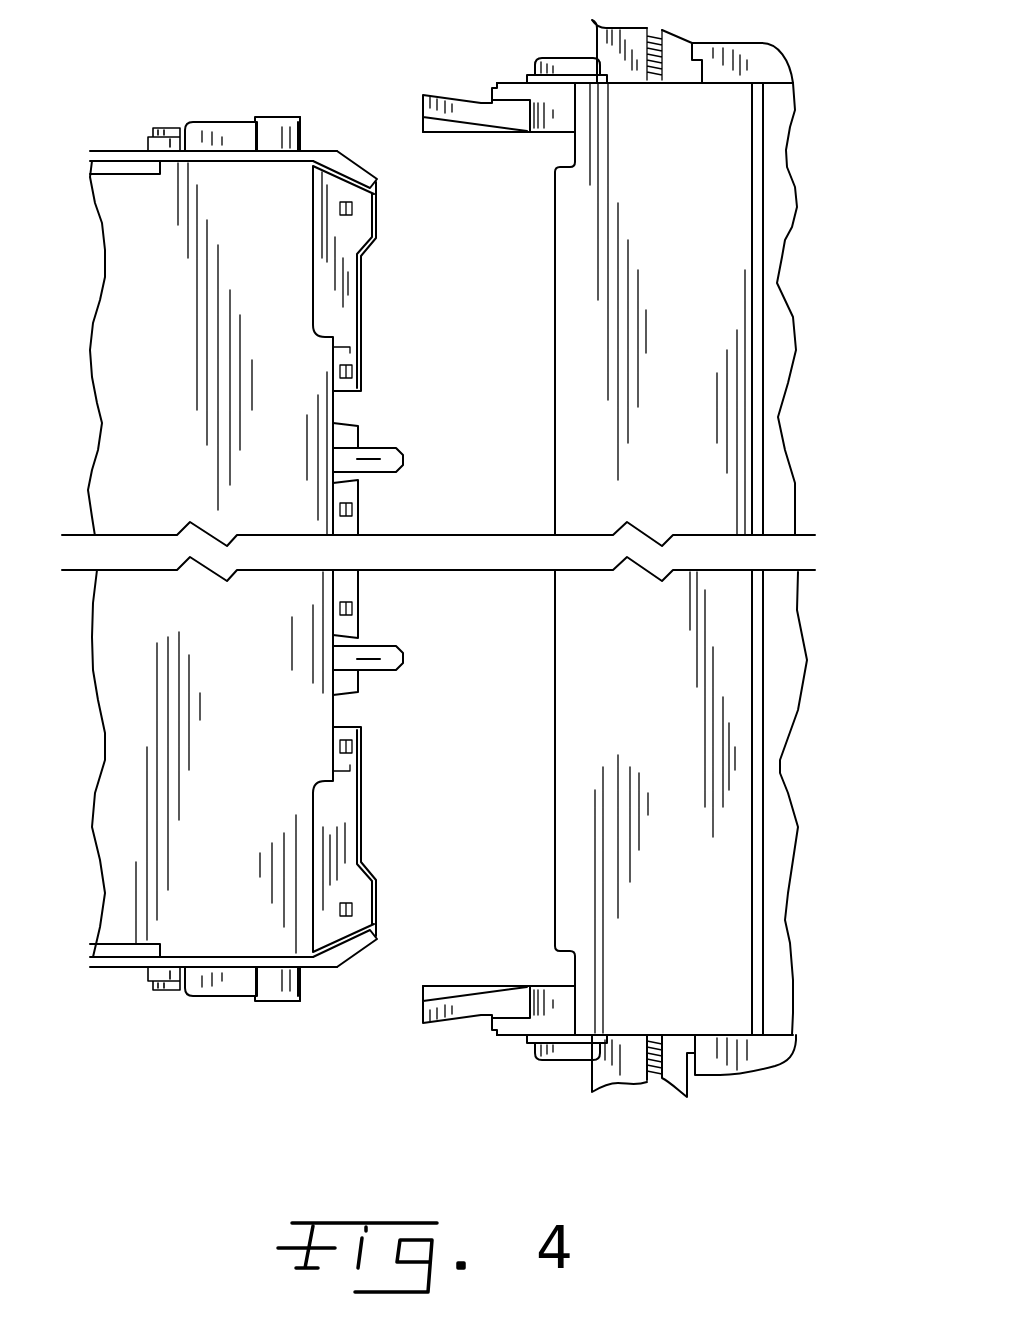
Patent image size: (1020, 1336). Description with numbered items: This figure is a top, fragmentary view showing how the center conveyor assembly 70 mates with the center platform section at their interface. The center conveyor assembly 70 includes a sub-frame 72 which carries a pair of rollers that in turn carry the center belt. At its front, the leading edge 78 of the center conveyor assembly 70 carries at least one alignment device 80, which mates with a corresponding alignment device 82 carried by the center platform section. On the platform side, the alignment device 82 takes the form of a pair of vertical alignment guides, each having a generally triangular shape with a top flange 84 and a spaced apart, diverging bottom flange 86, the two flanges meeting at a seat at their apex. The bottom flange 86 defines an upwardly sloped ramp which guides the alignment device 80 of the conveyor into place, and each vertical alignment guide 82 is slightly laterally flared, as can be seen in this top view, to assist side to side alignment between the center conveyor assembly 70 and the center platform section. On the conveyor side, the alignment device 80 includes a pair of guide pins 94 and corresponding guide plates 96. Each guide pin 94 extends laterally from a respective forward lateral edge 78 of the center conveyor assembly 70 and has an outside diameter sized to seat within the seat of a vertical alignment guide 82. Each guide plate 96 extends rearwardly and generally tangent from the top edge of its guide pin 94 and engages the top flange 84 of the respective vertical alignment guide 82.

The center conveyor assembly 70 is at (144, 107).
The sub-frame 72 is at (114, 147).
The leading edge 78 is at (353, 958).
The alignment device 80 is at (282, 94).
The vertical alignment guide 82 is at (450, 82).
The top flange 84 is at (520, 115).
The bottom flange 86 is at (453, 132).
The guide pin 94 is at (303, 133).
The guide plate 96 is at (224, 118).